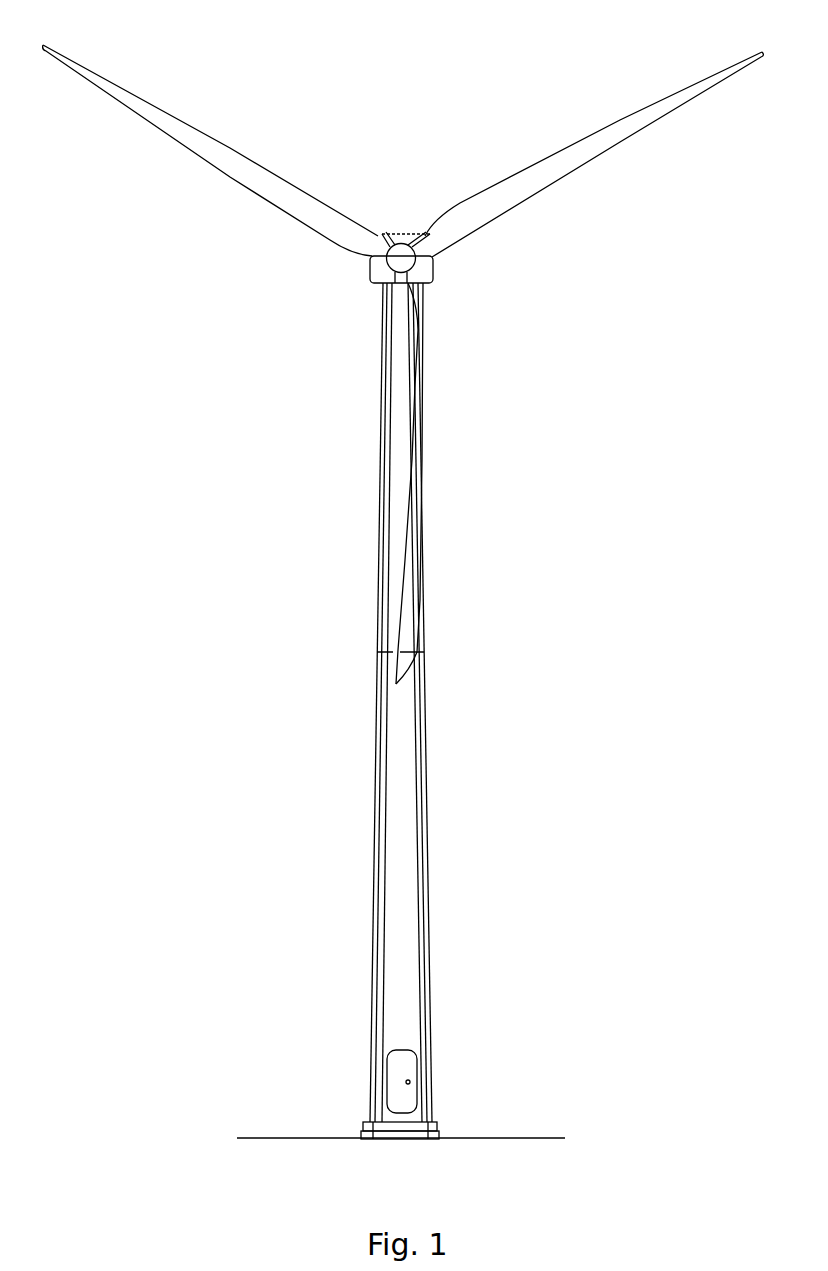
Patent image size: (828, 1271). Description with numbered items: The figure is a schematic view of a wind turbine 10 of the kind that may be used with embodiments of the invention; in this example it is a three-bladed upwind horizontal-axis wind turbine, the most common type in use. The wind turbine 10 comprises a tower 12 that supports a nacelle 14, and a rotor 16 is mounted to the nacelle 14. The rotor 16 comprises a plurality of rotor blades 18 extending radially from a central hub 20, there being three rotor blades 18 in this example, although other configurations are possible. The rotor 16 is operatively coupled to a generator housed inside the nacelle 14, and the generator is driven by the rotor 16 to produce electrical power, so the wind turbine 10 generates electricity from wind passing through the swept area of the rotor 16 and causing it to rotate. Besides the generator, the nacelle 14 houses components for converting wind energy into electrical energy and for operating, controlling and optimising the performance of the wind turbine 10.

The wind turbine 10 is at (288, 566).
The tower 12 is at (428, 697).
The nacelle 14 is at (433, 281).
The rotor 16 is at (284, 327).
The rotor blades 18 is at (282, 178).
The central hub 20 is at (393, 238).